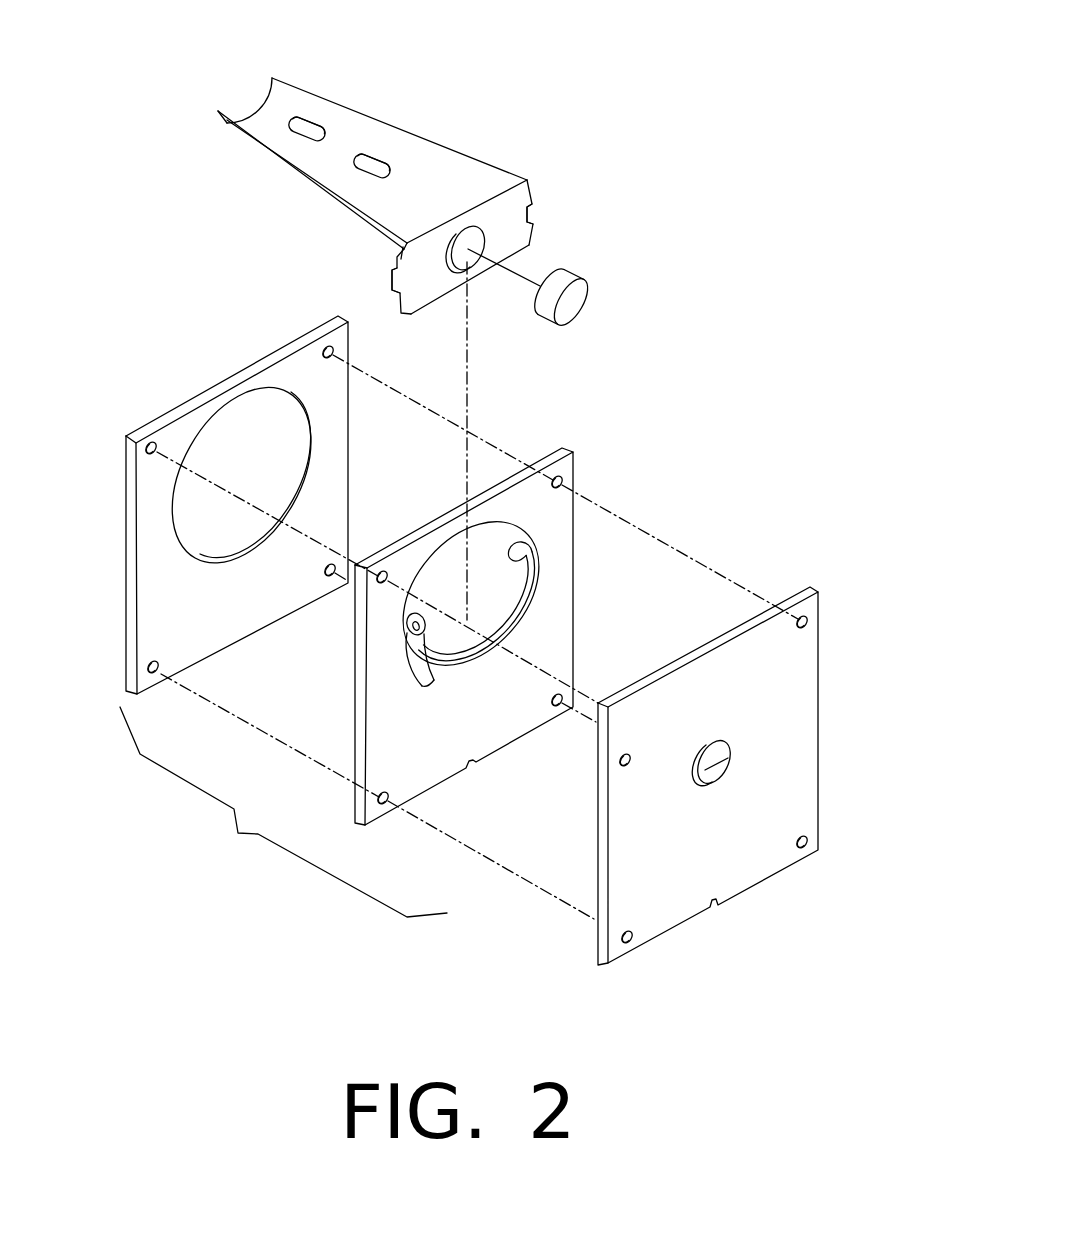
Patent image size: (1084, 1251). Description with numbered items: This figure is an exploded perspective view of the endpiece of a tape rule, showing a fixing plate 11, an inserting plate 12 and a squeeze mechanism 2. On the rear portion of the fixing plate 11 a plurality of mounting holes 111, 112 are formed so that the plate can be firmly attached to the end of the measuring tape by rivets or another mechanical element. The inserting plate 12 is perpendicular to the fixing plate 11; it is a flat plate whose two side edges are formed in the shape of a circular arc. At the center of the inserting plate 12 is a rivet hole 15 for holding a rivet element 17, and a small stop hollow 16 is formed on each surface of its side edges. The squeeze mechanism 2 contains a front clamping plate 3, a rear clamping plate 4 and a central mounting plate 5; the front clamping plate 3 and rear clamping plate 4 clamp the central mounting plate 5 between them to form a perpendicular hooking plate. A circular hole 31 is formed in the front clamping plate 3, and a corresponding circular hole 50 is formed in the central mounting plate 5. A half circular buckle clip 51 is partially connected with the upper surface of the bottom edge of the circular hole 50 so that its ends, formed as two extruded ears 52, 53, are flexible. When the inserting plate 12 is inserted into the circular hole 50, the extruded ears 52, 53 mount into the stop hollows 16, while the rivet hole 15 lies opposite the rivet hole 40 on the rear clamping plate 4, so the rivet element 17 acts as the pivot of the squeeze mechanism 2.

The squeeze mechanism 2 is at (283, 812).
The front clamping plate 3 is at (148, 558).
The circular hole 31 is at (210, 424).
The rear clamping plate 4 is at (808, 696).
The rivet hole 40 is at (732, 758).
The central mounting plate 5 is at (380, 755).
The circular hole 50 is at (427, 567).
The half circular buckle clip 51 is at (492, 523).
The extruded ear 52 is at (407, 633).
The extruded ear 53 is at (520, 562).
The fixing plate 11 is at (327, 107).
The mounting hole 111 is at (302, 131).
The mounting hole 112 is at (375, 165).
The inserting plate 12 is at (533, 224).
The rivet hole 15 is at (468, 250).
The stop hollow 16 is at (397, 272).
The rivet element 17 is at (567, 273).